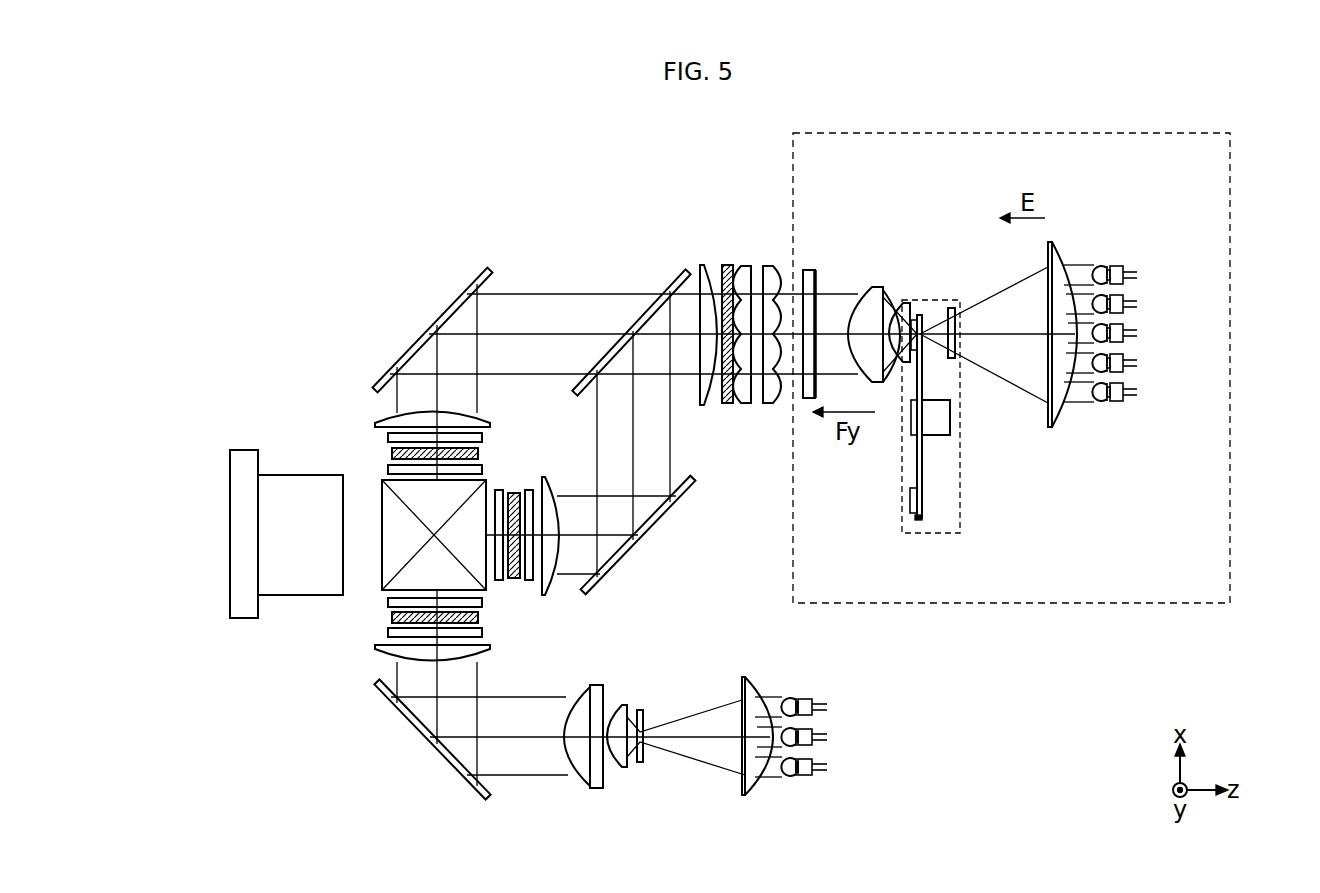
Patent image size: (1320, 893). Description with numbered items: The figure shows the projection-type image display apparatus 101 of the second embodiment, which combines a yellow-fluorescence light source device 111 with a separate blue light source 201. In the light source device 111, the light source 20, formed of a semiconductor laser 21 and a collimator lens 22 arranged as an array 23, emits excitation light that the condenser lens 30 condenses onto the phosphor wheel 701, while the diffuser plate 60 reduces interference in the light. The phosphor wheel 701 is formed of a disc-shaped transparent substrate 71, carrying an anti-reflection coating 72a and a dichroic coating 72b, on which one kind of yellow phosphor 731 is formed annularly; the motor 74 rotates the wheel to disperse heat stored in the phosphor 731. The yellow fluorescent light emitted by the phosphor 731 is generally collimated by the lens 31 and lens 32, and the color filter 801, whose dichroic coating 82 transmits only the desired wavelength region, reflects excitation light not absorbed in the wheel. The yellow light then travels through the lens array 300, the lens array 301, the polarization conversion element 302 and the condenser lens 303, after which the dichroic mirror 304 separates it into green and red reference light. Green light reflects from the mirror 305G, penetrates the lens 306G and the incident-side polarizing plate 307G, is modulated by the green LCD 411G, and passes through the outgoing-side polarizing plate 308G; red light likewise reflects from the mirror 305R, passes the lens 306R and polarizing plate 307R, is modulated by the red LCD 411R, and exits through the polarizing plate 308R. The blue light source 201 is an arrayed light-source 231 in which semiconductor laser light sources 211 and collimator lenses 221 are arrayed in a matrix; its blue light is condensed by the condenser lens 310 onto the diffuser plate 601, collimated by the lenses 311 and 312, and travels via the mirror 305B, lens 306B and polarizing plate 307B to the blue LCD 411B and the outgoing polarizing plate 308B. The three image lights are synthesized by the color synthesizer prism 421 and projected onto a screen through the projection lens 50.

The projection-type image display apparatus 101 is at (482, 151).
The projection lens 50 is at (230, 490).
The color synthesizer prism 421 is at (380, 585).
The mirror 305R is at (465, 297).
The lens 306R is at (378, 420).
The polarizing plate 307R is at (388, 435).
The red LCD 411R is at (392, 452).
The polarizing plate 308R is at (390, 468).
The polarizing plate 308B is at (388, 602).
The blue LCD 411B is at (392, 617).
The polarizing plate 307B is at (388, 632).
The lens 306B is at (380, 656).
The mirror 305B is at (430, 743).
The dichroic mirror 304 is at (645, 303).
The polarizing plate 308G is at (498, 580).
The green LCD 411G is at (515, 578).
The polarizing plate 307G is at (530, 488).
The lens 306G is at (562, 460).
The mirror 305G is at (658, 523).
The condenser lens 303 is at (700, 272).
The polarization conversion element 302 is at (722, 270).
The lens array 301 is at (748, 268).
The lens array 300 is at (770, 268).
The color filter 801 is at (808, 270).
The dichroic coating 82 is at (815, 285).
The lens 32 is at (868, 288).
The lens 31 is at (908, 305).
The light source device 111 is at (1232, 420).
The phosphor wheel 701 is at (960, 525).
The anti-reflection coating 72a is at (923, 487).
The motor 74 is at (940, 437).
The phosphor 731 is at (913, 500).
The dichroic coating 72b is at (917, 517).
The transparent substrate 71 is at (922, 518).
The diffuser plate 60 is at (955, 358).
The condenser lens 30 is at (1058, 422).
The light source 20 is at (1111, 281).
The collimator lens 22 is at (1102, 266).
The semiconductor laser 21 is at (1133, 302).
The light source array 23 is at (1143, 250).
The lens 312 is at (588, 780).
The lens 311 is at (623, 768).
The diffuser plate 601 is at (642, 763).
The condenser lens 310 is at (750, 797).
The collimator lens 221 is at (788, 695).
The semiconductor laser light source 211 is at (807, 700).
The arrayed light-source 231 is at (840, 692).
The light source 201 is at (823, 742).